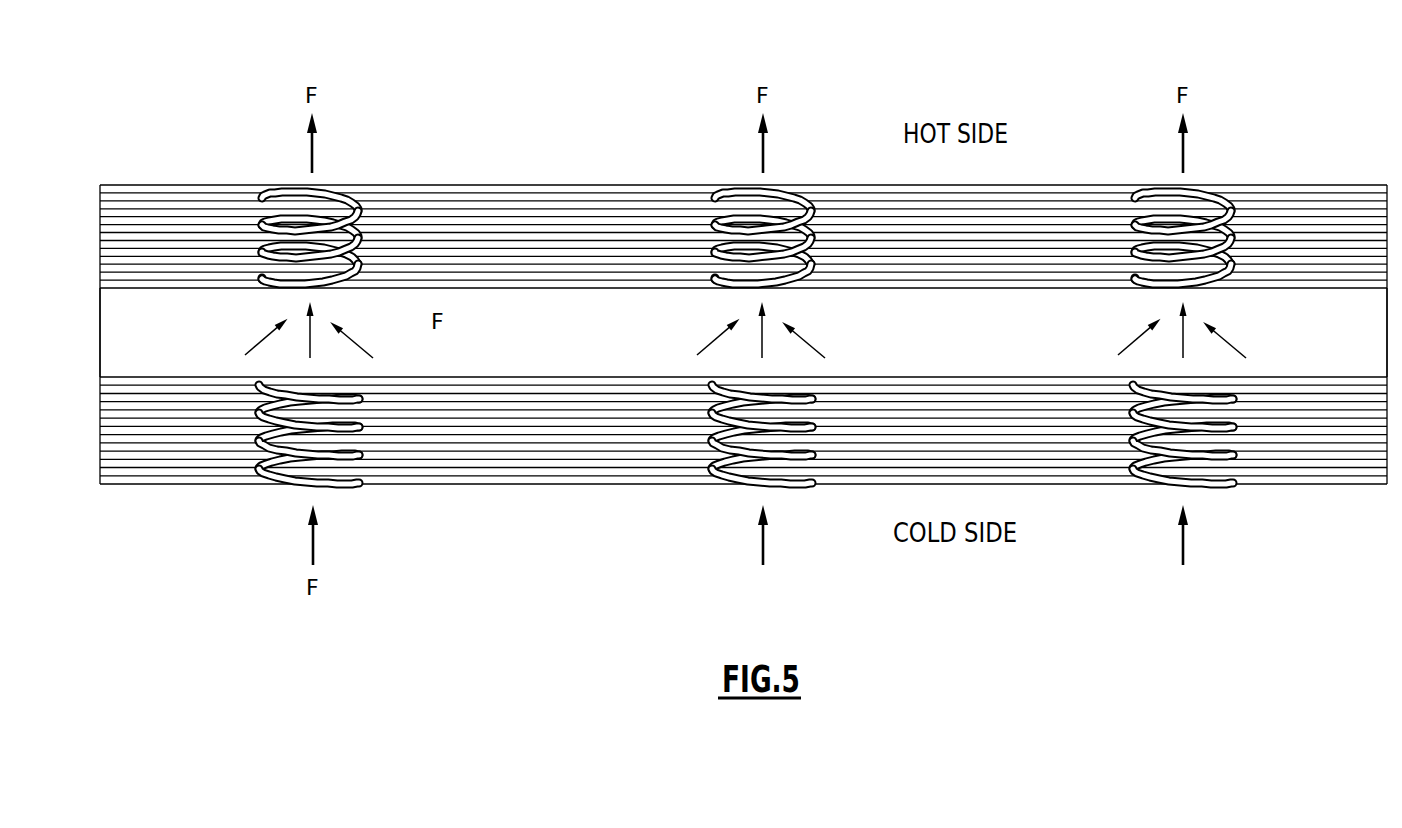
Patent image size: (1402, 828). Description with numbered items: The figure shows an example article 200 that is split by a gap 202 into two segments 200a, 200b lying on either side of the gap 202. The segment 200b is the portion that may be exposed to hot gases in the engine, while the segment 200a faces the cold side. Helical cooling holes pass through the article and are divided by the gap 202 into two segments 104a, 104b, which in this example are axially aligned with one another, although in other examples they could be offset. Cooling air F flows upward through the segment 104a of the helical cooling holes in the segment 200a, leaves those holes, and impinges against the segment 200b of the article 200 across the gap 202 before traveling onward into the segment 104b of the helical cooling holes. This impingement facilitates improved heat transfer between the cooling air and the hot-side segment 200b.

The article 200 is at (104, 98).
The segment of the article 200a is at (100, 433).
The segment of the article 200b is at (100, 241).
The gap 202 is at (120, 337).
The segment of the helical cooling holes 104a is at (263, 462).
The segment of the helical cooling holes 104b is at (371, 212).